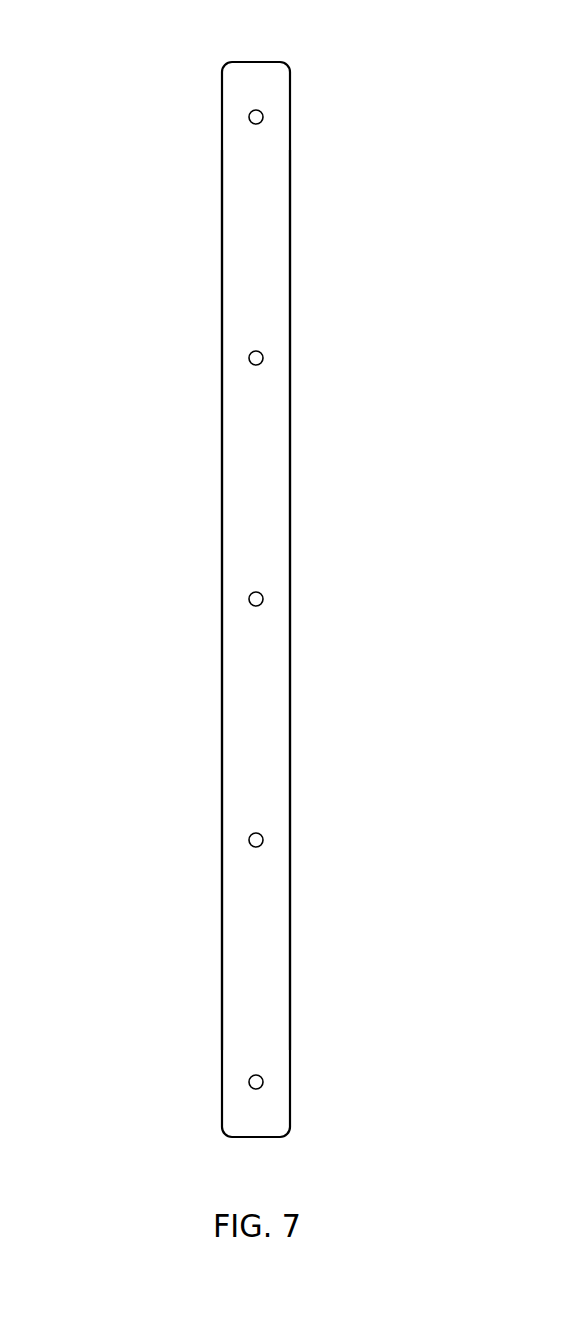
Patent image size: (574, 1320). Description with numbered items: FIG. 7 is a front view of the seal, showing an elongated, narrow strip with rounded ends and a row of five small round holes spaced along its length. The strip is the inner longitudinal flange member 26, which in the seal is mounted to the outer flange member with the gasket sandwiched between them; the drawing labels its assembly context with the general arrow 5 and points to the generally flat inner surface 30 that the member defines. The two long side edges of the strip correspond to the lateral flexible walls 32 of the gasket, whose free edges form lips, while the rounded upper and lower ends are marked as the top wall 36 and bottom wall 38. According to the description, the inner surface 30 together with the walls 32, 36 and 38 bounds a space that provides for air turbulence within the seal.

The hanger bar assembly 5 is at (258, 413).
The inner longitudinal flange member 26 is at (258, 551).
The inner surface 30 is at (258, 688).
The lateral flexible walls 32 is at (223, 222).
The top wall 36 is at (255, 62).
The bottom wall 38 is at (256, 1137).